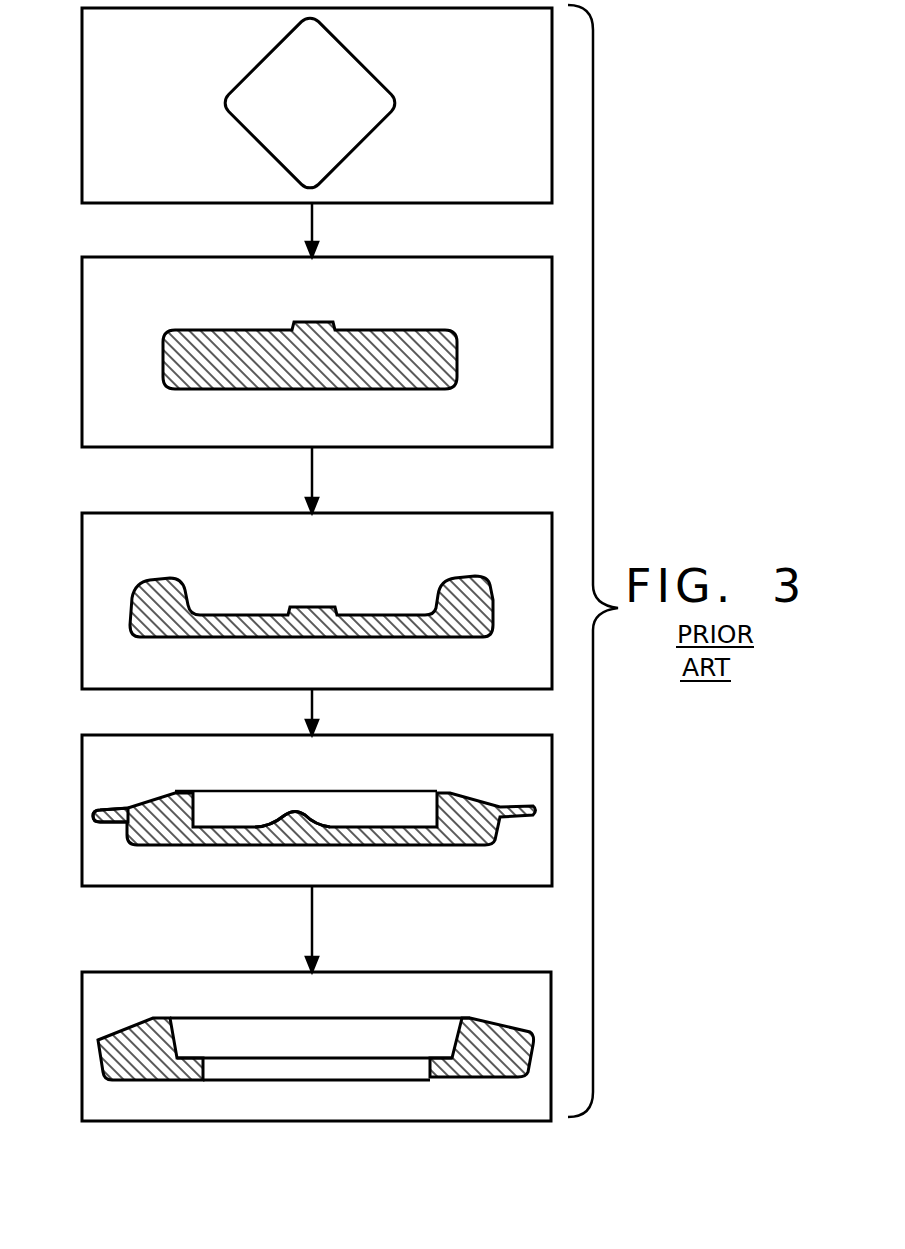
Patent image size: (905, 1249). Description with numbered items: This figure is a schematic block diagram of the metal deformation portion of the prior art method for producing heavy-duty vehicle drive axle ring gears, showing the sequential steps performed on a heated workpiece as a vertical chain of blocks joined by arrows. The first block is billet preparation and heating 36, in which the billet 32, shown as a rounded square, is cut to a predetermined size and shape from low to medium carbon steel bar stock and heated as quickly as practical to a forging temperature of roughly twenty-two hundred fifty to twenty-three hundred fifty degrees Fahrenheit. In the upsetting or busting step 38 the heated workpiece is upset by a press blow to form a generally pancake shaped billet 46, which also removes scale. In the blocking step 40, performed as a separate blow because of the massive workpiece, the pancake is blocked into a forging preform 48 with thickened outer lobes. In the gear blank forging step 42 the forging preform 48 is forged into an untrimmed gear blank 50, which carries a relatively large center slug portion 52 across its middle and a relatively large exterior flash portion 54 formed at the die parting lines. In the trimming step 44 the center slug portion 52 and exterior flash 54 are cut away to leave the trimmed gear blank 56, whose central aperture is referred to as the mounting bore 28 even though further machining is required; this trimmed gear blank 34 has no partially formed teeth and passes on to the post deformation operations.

The billet preparation and heating step 36 is at (82, 110).
The billet 32 is at (375, 92).
The upsetting step 38 is at (82, 352).
The pancake shaped billet 46 is at (378, 355).
The blocking step 40 is at (82, 630).
The forging preform 48 is at (390, 625).
The gear blank forging step 42 is at (82, 822).
The untrimmed gear blank 50 is at (163, 812).
The center slug portion 52 is at (338, 830).
The exterior flash portion 54 is at (108, 815).
The trimming step 44 is at (82, 1036).
The trimmed gear blank 56 is at (128, 1052).
The mounting bore 28 is at (235, 1072).
The trimmed gear blank 34 is at (508, 1058).